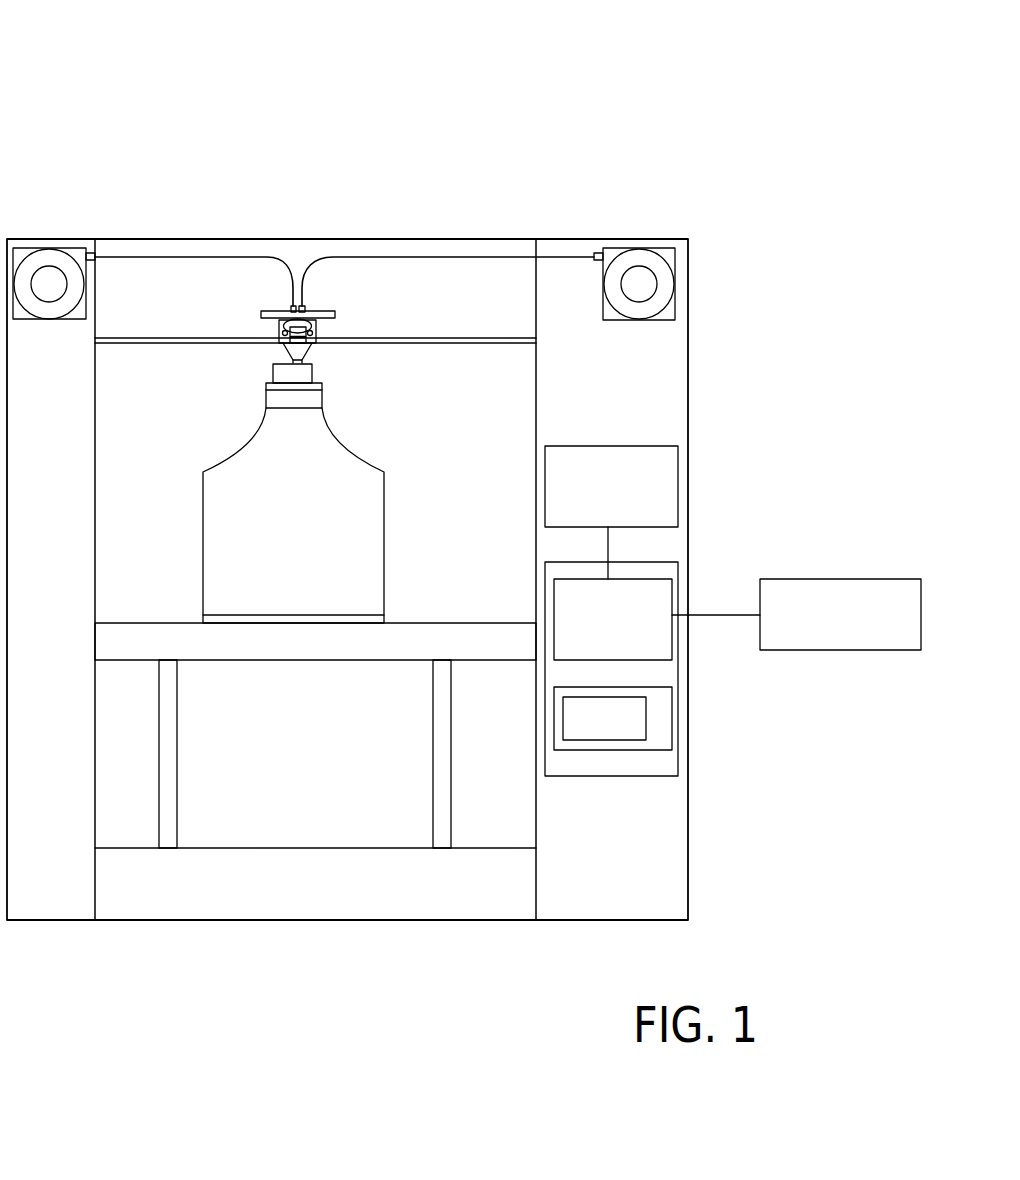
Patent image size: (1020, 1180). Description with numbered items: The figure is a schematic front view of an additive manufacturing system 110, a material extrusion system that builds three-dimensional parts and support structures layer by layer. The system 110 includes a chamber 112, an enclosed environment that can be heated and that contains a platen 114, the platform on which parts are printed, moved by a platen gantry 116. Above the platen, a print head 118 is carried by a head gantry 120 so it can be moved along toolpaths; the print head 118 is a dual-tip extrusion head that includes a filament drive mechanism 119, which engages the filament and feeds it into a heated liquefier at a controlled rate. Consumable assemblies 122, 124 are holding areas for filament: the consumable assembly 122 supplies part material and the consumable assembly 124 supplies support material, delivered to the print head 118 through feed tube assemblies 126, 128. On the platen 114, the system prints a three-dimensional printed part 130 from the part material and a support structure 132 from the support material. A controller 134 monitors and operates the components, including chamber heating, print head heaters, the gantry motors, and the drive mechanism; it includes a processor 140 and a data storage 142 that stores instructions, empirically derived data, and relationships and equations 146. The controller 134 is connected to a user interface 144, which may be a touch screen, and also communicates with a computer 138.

The additive manufacturing system 110 is at (144, 110).
The chamber 112 is at (492, 411).
The platen 114 is at (140, 640).
The platen gantry 116 is at (167, 750).
The print head 118 is at (280, 330).
The filament drive mechanism 119 is at (314, 303).
The head gantry 120 is at (402, 344).
The consumable assembly 122 is at (50, 249).
The consumable assembly 124 is at (639, 265).
The feed tube assembly 126 is at (219, 257).
The feed tube assembly 128 is at (418, 257).
The 3D part 130 is at (285, 373).
The support structure 132 is at (203, 620).
The controller 134 is at (652, 768).
The computer 138 is at (860, 641).
The processor 140 is at (652, 641).
The data storage 142 is at (672, 713).
The user interface 144 is at (672, 481).
The relationships and equations 146 is at (620, 735).